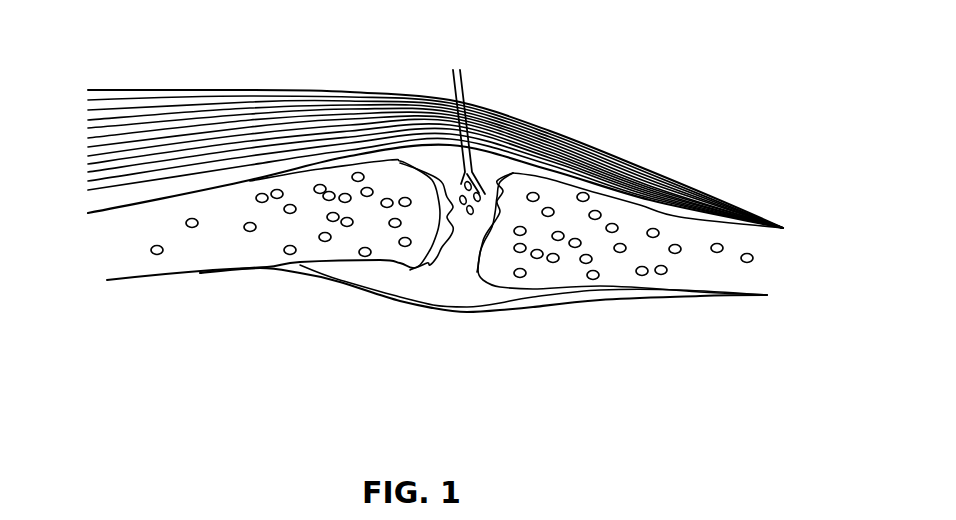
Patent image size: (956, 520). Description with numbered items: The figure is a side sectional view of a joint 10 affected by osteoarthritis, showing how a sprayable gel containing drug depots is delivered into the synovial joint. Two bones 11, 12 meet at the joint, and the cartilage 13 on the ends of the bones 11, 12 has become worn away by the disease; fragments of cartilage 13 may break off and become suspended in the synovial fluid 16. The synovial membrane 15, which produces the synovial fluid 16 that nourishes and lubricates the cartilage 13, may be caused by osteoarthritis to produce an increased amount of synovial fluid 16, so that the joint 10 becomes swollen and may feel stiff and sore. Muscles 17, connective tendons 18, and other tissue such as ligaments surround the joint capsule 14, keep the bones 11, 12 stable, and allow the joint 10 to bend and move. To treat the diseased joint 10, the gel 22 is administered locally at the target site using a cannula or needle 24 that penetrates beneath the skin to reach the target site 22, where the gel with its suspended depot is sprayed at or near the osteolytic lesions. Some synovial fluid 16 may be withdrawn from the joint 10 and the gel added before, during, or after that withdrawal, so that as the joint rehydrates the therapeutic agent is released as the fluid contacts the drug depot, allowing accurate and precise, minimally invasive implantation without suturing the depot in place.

The joint 10 is at (292, 86).
The bone 11 is at (268, 250).
The bone 12 is at (622, 278).
The cartilage 13 is at (430, 247).
The joint capsule 14 is at (547, 130).
The synovial membrane 15 is at (634, 197).
The synovial fluid 16 is at (462, 262).
The muscles 17 is at (198, 140).
The connective tendons 18 is at (620, 160).
The gel 22 is at (480, 180).
The cannula or needle 24 is at (452, 93).